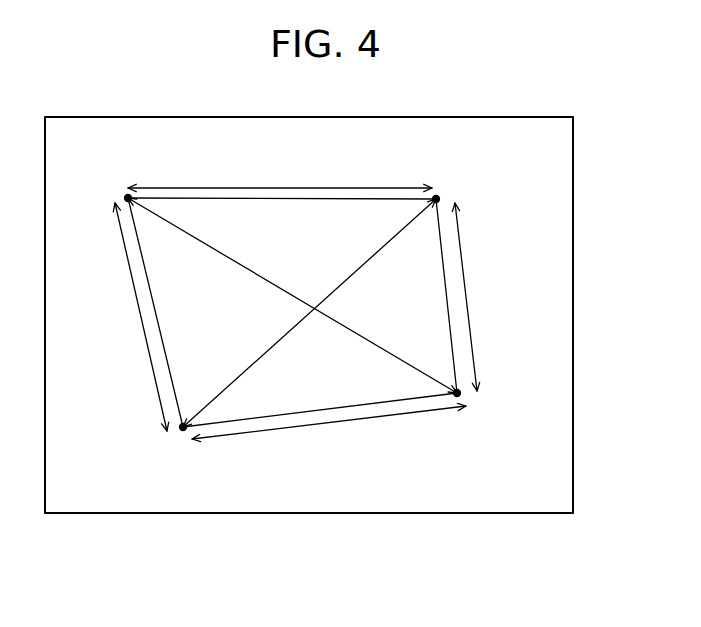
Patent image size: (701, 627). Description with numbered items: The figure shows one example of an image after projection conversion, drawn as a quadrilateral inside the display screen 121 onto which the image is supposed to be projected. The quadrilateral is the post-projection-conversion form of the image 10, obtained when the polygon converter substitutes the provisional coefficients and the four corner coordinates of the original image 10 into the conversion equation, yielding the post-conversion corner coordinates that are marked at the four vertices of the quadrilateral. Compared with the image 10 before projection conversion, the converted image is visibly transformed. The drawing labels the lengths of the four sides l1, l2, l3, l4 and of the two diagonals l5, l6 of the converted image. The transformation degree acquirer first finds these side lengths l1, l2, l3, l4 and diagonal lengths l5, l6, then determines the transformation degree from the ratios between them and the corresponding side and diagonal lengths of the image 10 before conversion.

The display screen 121 is at (552, 117).
The image 10 is at (341, 169).
The side length l1 is at (280, 176).
The side length l2 is at (470, 297).
The side length l3 is at (329, 428).
The side length l4 is at (141, 317).
The diagonal length l5 is at (292, 295).
The diagonal length l6 is at (309, 313).